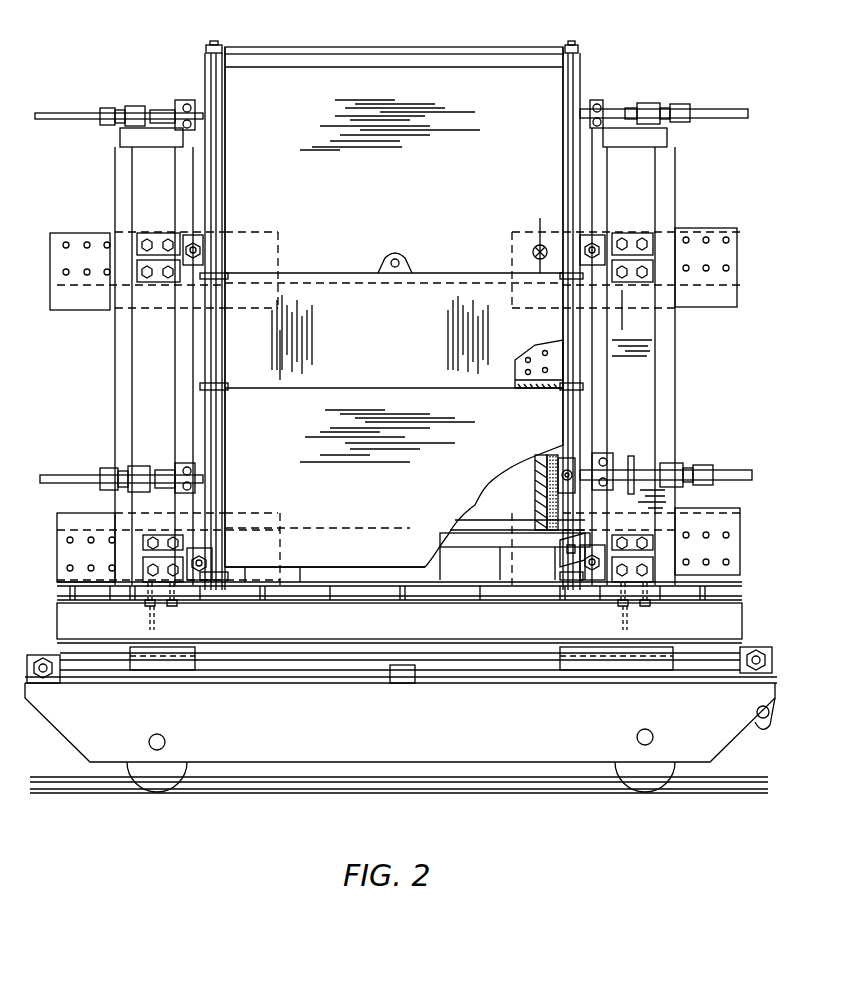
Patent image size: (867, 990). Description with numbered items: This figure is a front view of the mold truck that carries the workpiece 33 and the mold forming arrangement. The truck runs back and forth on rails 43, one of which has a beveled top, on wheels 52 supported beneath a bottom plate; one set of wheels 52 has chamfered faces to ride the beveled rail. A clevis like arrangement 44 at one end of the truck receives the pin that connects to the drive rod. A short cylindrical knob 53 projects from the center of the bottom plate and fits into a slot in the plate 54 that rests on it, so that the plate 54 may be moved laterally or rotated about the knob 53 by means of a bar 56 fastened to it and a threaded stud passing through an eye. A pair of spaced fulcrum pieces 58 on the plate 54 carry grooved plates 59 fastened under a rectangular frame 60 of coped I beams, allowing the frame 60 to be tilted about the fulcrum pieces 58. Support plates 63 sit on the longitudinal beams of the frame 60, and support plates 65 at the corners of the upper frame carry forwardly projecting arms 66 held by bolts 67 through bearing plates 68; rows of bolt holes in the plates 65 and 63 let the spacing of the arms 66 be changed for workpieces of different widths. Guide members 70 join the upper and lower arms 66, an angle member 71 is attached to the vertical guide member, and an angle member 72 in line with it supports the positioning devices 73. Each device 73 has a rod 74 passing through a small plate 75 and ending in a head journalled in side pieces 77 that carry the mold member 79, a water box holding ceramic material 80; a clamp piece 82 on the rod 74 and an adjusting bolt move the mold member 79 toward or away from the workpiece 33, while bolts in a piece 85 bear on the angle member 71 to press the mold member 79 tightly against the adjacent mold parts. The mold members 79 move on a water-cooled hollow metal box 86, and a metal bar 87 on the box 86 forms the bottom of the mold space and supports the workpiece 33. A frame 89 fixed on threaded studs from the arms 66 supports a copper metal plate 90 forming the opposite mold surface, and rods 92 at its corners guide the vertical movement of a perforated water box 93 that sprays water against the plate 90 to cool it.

The workpiece 33 is at (528, 478).
The rails 43 is at (572, 792).
The clevis like arrangement 44 is at (752, 720).
The wheels 52 is at (655, 775).
The cylindrical knob 53 is at (410, 668).
The plate 54 is at (486, 677).
The bar 56 is at (738, 650).
The fulcrum pieces 58 is at (608, 660).
The grooved plates 59 is at (590, 655).
The rectangular frame 60 is at (735, 612).
The support plates 63 is at (420, 596).
The support plate 65 is at (718, 228).
The arms 66 is at (648, 232).
The bolts 67 is at (622, 238).
The bearing plates 68 is at (624, 300).
The guide members 70 is at (598, 392).
The angle member 71 is at (607, 188).
The angle member 72 is at (675, 182).
The positioning devices 73 is at (687, 81).
The rod 74 is at (722, 109).
The small plate 75 is at (650, 104).
The side pieces 77 is at (563, 493).
The mold member 79 is at (535, 480).
The ceramic material 80 is at (547, 495).
The clamp piece 82 is at (682, 108).
The piece 85 is at (600, 108).
The hollow metal box 86 is at (478, 545).
The metal bar 87 is at (470, 532).
The frame 89 is at (398, 58).
The metal plate 90 is at (505, 80).
The rods 92 is at (578, 67).
The water box 93 is at (445, 275).